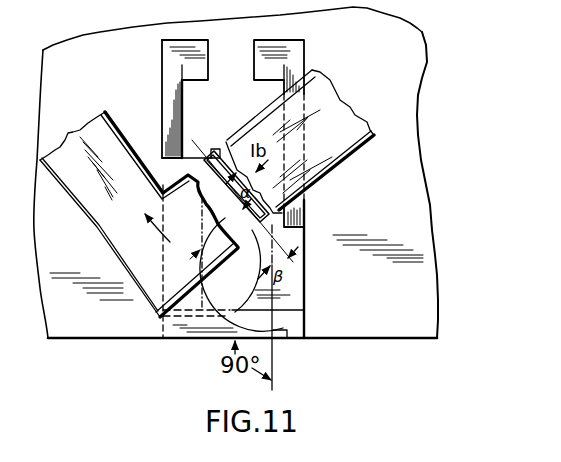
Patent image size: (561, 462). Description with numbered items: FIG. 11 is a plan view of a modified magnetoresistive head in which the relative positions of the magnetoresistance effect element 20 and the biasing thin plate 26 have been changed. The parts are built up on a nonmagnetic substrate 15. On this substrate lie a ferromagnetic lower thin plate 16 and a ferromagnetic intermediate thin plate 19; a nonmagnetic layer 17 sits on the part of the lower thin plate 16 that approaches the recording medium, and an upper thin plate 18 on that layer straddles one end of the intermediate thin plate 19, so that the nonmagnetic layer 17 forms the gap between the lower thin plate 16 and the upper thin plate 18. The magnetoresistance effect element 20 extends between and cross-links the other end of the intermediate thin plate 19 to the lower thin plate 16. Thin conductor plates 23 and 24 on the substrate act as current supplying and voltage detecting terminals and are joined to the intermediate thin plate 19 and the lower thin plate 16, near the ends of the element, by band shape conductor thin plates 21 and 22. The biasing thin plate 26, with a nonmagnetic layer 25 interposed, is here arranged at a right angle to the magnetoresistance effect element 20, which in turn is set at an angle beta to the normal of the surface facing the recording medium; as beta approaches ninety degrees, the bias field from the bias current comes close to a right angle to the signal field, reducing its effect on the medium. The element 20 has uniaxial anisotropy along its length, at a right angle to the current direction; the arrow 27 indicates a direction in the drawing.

The nonmagnetic substrate 15 is at (407, 63).
The lower thin plate 16 is at (296, 298).
The nonmagnetic layer 17 is at (300, 323).
The upper thin plate 18 is at (184, 330).
The intermediate thin plate 19 is at (172, 172).
The magnetoresistance effect element 20 is at (213, 149).
The band shape conductor thin plate 21 is at (168, 90).
The band shape conductor thin plate 22 is at (305, 213).
The thin conductor plate 23 is at (168, 50).
The thin conductor plate 24 is at (300, 51).
The nonmagnetic layer 25 is at (352, 158).
The biasing thin plate 26 is at (343, 128).
The direction arrow 27 is at (172, 241).